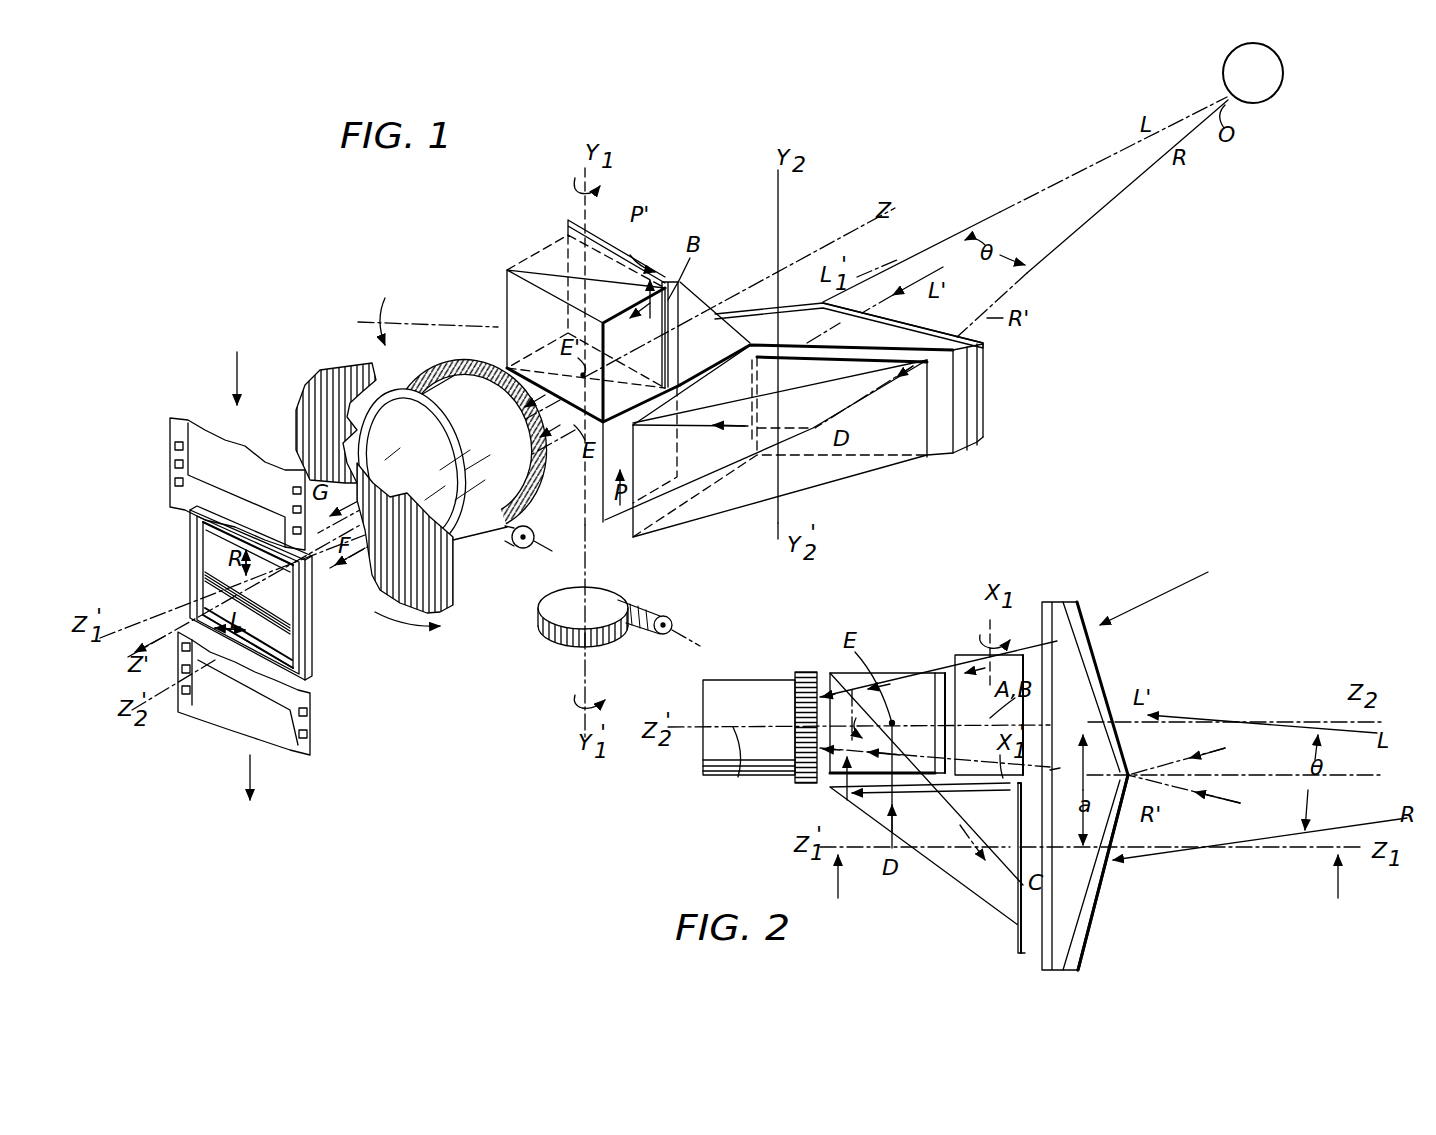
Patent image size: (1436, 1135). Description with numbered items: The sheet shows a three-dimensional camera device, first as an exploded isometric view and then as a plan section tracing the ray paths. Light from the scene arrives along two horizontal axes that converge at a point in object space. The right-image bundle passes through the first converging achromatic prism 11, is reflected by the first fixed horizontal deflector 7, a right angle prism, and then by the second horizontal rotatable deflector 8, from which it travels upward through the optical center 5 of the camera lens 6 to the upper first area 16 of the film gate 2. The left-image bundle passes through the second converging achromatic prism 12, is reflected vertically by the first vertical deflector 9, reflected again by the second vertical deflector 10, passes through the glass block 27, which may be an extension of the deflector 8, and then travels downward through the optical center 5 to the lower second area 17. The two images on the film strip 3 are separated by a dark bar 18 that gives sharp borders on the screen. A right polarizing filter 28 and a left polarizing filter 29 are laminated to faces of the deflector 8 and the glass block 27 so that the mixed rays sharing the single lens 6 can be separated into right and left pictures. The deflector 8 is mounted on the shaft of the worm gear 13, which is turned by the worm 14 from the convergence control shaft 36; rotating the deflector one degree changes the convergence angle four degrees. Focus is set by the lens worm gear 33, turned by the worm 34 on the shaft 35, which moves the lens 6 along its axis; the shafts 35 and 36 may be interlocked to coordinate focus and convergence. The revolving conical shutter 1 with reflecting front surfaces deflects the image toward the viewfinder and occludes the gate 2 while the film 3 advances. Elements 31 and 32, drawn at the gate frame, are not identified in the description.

In FIG. 1, the shutter element 1 is at (320, 385).
In FIG. 1, the film gate 2 is at (306, 628).
In FIG. 1, the film strip 3 is at (200, 440).
In FIG. 2, the film strip 3 is at (1091, 887).
In FIG. 2, the optical center of the lens 5 is at (736, 780).
In FIG. 1, the camera lens 6 is at (418, 408).
In FIG. 2, the camera lens 6 is at (757, 690).
In FIG. 1, the first fixed horizontal deflector 7 is at (848, 478).
In FIG. 2, the first fixed horizontal deflector 7 is at (934, 832).
In FIG. 2, the second horizontal rotatable deflector 8 is at (917, 697).
In FIG. 1, the first vertical deflector 9 is at (745, 424).
In FIG. 1, the second vertical deflector 10 is at (722, 348).
In FIG. 2, the second vertical deflector 10 is at (963, 657).
In FIG. 1, the first converging achromatic prism 11 is at (918, 333).
In FIG. 2, the first converging achromatic prism 11 is at (1088, 915).
In FIG. 1, the second converging achromatic prism 12 is at (750, 320).
In FIG. 2, the second converging achromatic prism 12 is at (1097, 653).
In FIG. 1, the worm gear 13 is at (555, 618).
In FIG. 1, the worm 14 is at (648, 603).
In FIG. 1, the first area 16 is at (296, 590).
In FIG. 1, the second area 17 is at (292, 652).
In FIG. 1, the dark bar 18 is at (207, 575).
In FIG. 1, the glass block 27 is at (530, 258).
In FIG. 1, the right polarizing filter 28 is at (604, 514).
In FIG. 1, the left polarizing filter 29 is at (575, 232).
In FIG. 1, the window edge 31 is at (210, 545).
In FIG. 1, the window edge 32 is at (215, 598).
In FIG. 1, the lens worm gear 33 is at (480, 378).
In FIG. 1, the worm 34 is at (510, 562).
In FIG. 1, the shaft 35 is at (554, 558).
In FIG. 1, the convergence control shaft 36 is at (696, 627).